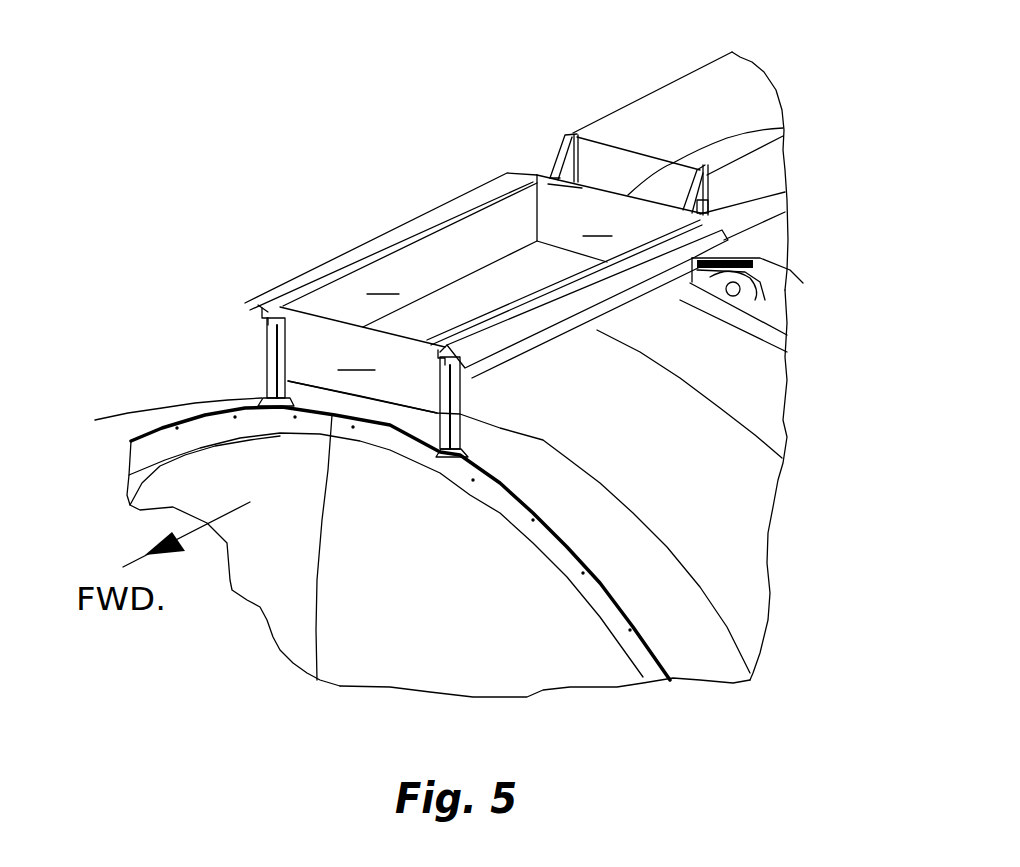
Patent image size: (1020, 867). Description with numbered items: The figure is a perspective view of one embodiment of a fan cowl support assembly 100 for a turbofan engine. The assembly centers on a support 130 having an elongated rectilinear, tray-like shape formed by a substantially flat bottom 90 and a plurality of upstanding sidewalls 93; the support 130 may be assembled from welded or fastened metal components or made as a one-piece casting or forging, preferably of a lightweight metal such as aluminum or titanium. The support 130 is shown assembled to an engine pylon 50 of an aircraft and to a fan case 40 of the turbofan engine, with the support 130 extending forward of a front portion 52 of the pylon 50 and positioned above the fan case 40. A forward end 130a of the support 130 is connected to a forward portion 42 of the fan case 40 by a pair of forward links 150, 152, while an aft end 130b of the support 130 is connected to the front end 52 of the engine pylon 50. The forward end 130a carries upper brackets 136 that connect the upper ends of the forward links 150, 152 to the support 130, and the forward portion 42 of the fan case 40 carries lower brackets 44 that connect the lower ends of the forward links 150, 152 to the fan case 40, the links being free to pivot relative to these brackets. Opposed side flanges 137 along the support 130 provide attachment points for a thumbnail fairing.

The fan cowl support assembly 100 is at (176, 54).
The fan case 40 is at (703, 450).
The forward portion of the fan case 42 is at (627, 587).
The lower brackets 44 is at (506, 442).
The engine pylon 50 is at (733, 87).
The front portion of the pylon 52 is at (617, 133).
The bottom 90 is at (500, 304).
The sidewalls 93 is at (567, 367).
The support 130 is at (318, 268).
The forward end of the support 130a is at (363, 370).
The aft end of the support 130b is at (784, 127).
The upper brackets 136 is at (262, 318).
The side flanges 137 is at (404, 230).
The forward link 150 is at (265, 360).
The forward link 152 is at (452, 417).